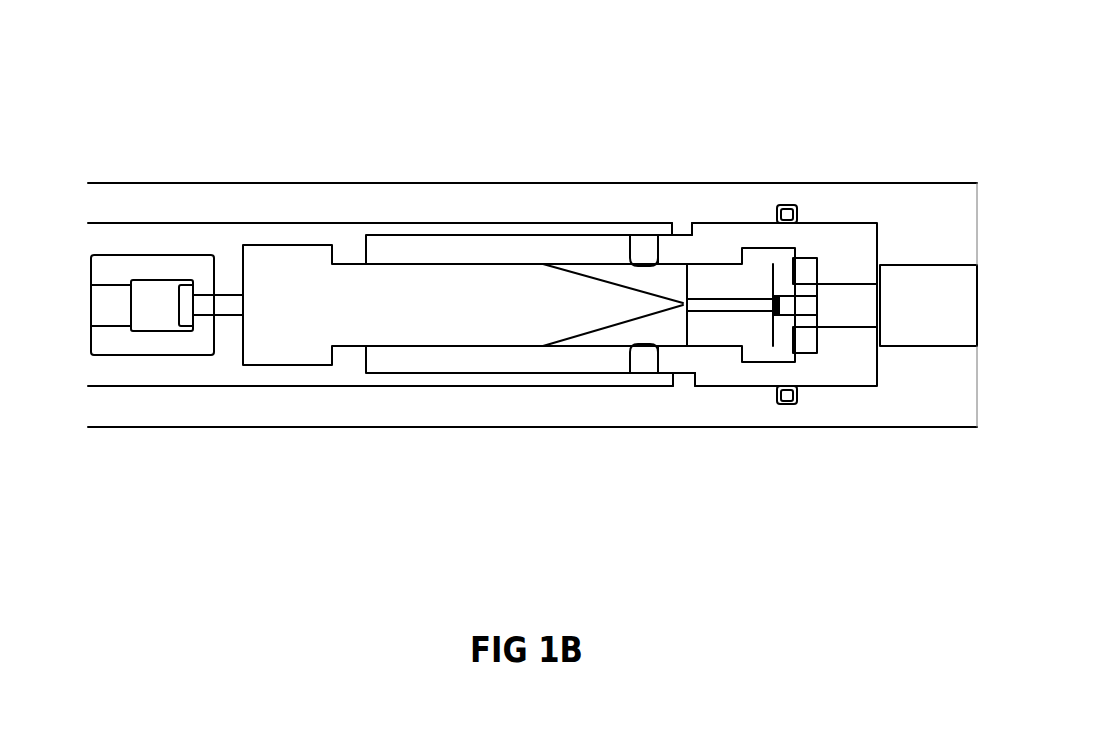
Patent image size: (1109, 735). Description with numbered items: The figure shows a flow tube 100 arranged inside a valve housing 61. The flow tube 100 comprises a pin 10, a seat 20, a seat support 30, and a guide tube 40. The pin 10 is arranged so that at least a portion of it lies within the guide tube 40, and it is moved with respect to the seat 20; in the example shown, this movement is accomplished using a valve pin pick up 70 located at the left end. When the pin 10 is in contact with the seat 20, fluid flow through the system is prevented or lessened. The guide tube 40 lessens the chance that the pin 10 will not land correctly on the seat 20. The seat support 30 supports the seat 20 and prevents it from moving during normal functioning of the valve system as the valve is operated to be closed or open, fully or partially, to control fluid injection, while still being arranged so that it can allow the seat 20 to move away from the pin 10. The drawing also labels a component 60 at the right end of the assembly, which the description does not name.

The flow tube 100 is at (335, 233).
The pin 10 is at (475, 343).
The seat 20 is at (717, 258).
The seat support 30 is at (793, 245).
The guide tube 40 is at (713, 392).
The housing 60 is at (835, 385).
The valve housing 61 is at (723, 225).
The valve pin pick up 70 is at (127, 345).